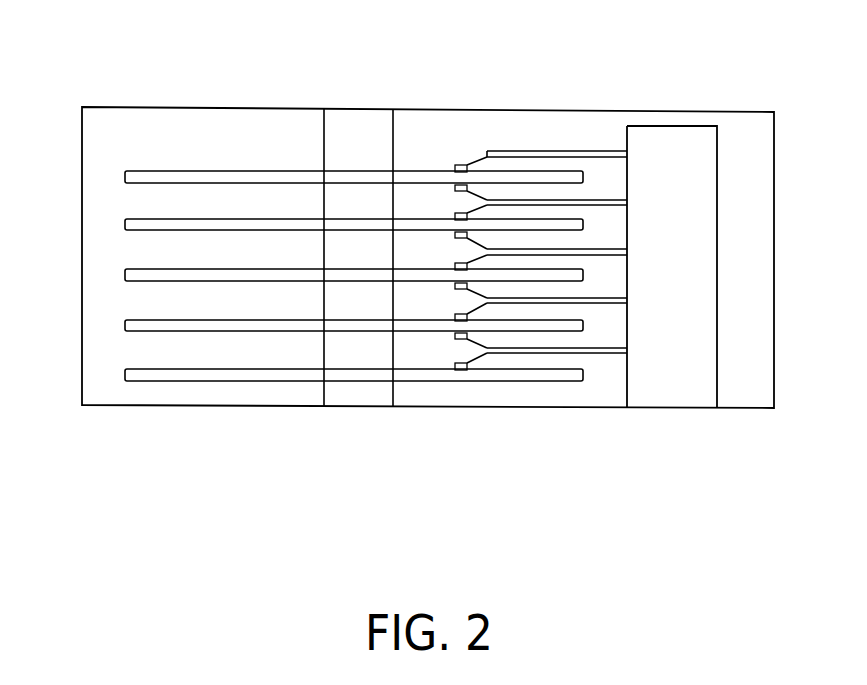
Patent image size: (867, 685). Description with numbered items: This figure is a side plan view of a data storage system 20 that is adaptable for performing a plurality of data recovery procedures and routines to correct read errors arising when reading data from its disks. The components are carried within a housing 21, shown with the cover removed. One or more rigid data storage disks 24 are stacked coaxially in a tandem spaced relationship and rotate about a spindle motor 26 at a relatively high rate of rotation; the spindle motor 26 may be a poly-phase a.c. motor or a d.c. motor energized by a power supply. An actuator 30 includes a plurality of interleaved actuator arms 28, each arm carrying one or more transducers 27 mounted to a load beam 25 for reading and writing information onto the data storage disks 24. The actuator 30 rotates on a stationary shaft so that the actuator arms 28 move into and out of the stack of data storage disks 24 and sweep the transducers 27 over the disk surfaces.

The data storage system 20 is at (680, 83).
The housing 21 is at (774, 293).
The data storage disks 24 is at (124, 177).
The load beam 25 is at (487, 158).
The spindle motor 26 is at (350, 398).
The transducers 27 is at (457, 166).
The actuator arms 28 is at (543, 151).
The actuator 30 is at (670, 380).